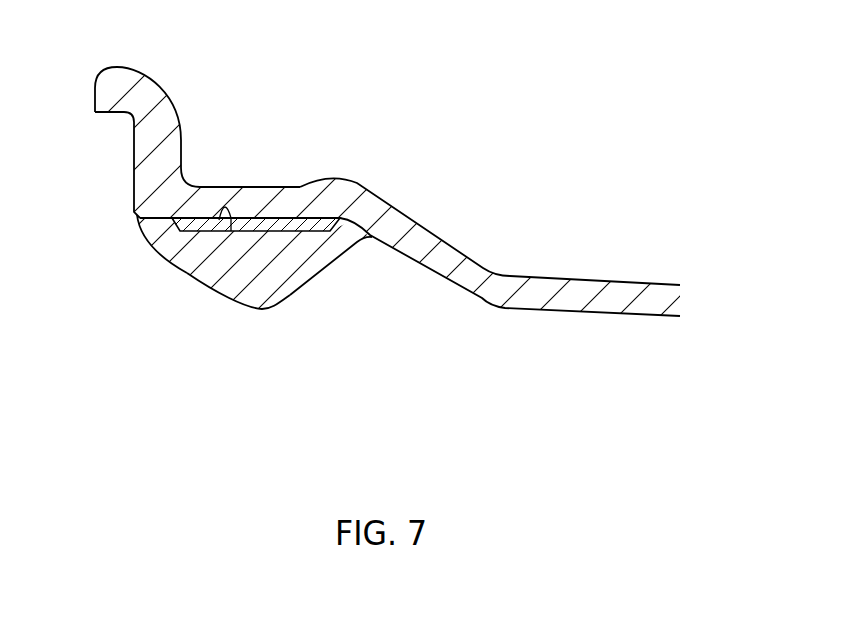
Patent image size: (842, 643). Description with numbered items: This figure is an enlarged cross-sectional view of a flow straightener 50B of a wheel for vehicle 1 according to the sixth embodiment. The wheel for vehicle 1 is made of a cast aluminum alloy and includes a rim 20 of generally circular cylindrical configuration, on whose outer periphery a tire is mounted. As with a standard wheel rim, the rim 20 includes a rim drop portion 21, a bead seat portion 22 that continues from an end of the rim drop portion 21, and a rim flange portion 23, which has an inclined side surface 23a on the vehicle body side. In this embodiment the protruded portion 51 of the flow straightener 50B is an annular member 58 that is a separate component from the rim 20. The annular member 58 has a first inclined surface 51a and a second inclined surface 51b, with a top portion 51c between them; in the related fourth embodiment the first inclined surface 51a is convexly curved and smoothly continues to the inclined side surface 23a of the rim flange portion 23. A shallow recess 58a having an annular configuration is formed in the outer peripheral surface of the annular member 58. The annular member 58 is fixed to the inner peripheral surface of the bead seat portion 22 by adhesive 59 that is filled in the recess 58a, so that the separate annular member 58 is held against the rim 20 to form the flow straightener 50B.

The wheel for vehicle 1 is at (421, 321).
The rim 20 is at (421, 321).
The rim drop portion 21 is at (627, 280).
The bead seat portion 22 is at (230, 187).
The rim flange portion 23 is at (125, 80).
The inclined side surface 23a is at (134, 150).
The flow straightener 50B is at (300, 321).
The protruded portion 51 is at (300, 321).
The first inclined surface 51a is at (168, 256).
The second inclined surface 51b is at (320, 263).
The top portion 51c is at (257, 310).
The annular member 58 is at (300, 273).
The recess 58a is at (219, 220).
The adhesive 59 is at (297, 225).